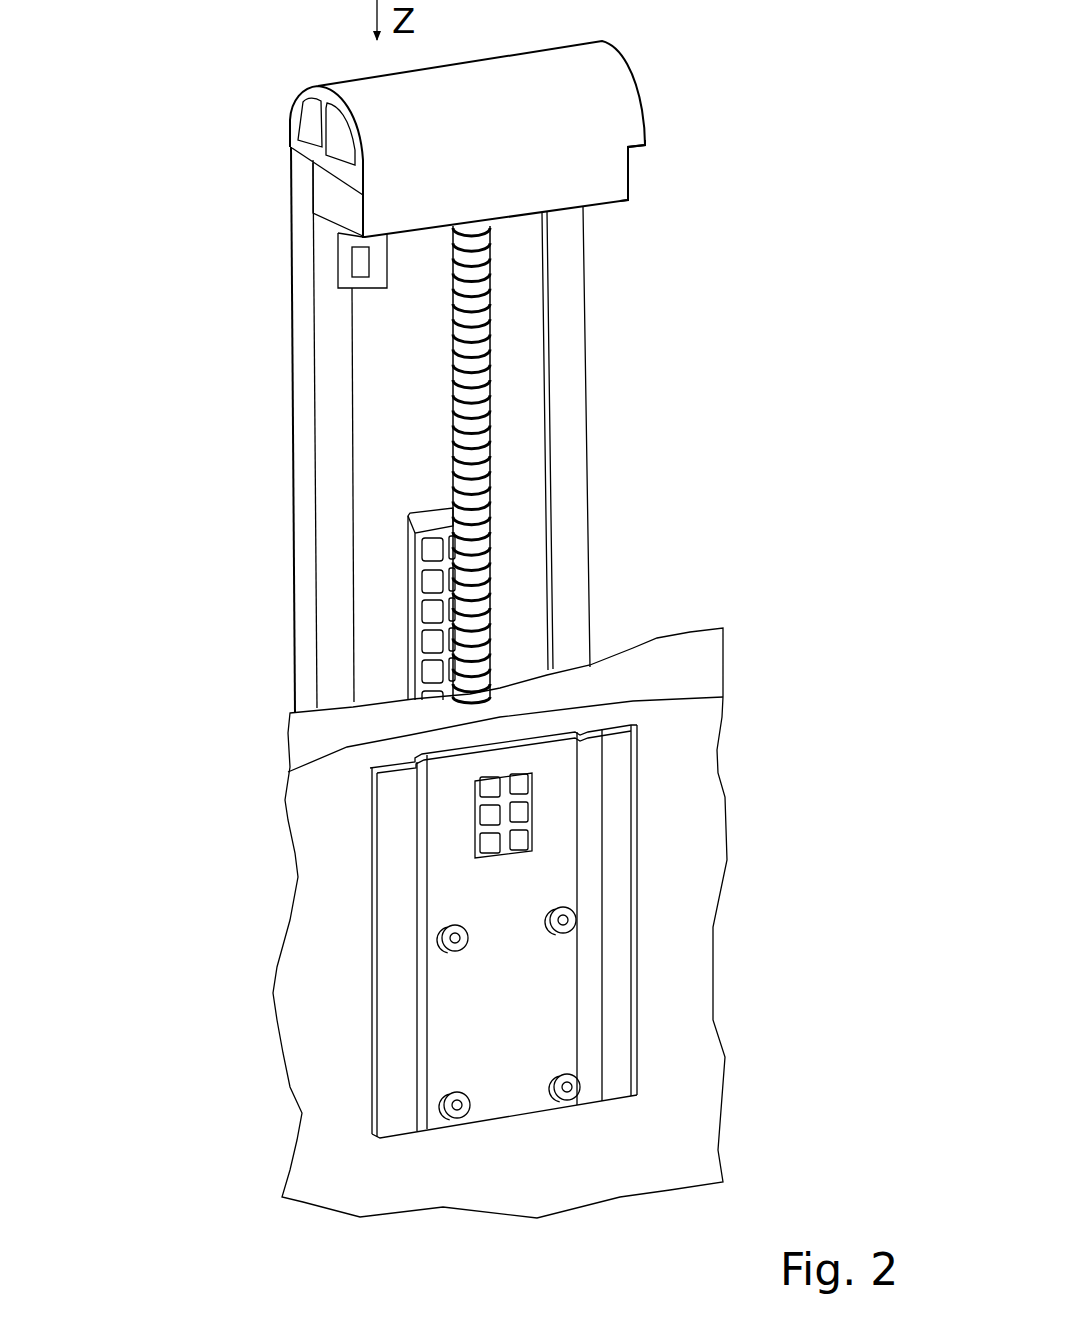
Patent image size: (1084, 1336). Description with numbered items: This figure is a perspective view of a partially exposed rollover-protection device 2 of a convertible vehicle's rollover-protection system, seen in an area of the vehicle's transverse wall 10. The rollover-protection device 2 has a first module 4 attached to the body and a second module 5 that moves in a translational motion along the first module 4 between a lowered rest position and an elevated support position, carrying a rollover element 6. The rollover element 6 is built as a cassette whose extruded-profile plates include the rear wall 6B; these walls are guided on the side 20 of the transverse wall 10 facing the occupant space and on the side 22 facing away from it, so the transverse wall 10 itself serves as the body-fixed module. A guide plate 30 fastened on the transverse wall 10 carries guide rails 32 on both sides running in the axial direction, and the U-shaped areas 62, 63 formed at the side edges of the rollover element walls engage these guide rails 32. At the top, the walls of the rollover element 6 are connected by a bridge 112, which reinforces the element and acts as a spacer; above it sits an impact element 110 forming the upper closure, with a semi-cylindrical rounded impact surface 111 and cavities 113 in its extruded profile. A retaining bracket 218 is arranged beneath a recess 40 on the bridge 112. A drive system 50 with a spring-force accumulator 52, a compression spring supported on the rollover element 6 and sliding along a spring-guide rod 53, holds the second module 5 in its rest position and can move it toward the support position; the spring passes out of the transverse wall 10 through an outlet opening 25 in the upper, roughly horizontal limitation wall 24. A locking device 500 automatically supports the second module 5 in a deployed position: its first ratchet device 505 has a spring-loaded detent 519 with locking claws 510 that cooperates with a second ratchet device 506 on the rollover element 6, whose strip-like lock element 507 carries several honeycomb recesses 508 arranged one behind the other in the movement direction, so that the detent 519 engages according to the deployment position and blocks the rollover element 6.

The rollover-protection device 2 is at (456, 121).
The first module 4 is at (331, 1192).
The second module 5 is at (634, 173).
The rollover element 6 is at (456, 429).
The rear wall of the rollover element 6B is at (383, 423).
The transverse wall 10 is at (456, 874).
The side of the transverse wall facing the occupant space 20 is at (456, 867).
The side of the transverse wall facing away from the occupant space 22 is at (352, 873).
The limitation wall 24 is at (562, 688).
The outlet opening 25 is at (499, 691).
The guide plate 30 is at (373, 1118).
The guide rails 32 is at (403, 1042).
The recess 40 is at (247, 311).
The drive system 50 is at (620, 445).
The spring-force accumulator 52 is at (494, 283).
The spring-guide rod 53 is at (470, 345).
The U-shaped area 62 is at (310, 485).
The U-shaped area 63 is at (572, 418).
The impact element 110 is at (607, 93).
The impact surface 111 is at (236, 121).
The bridge 112 is at (332, 193).
The cavities 113 is at (312, 125).
The retaining bracket 218 is at (360, 283).
The locking device 500 is at (281, 622).
The first ratchet device 505 is at (469, 857).
The second ratchet device 506 is at (406, 587).
The lock element 507 is at (415, 620).
The honeycomb recesses 508 is at (432, 640).
The locking claws 510 is at (456, 782).
The detent 519 is at (507, 828).